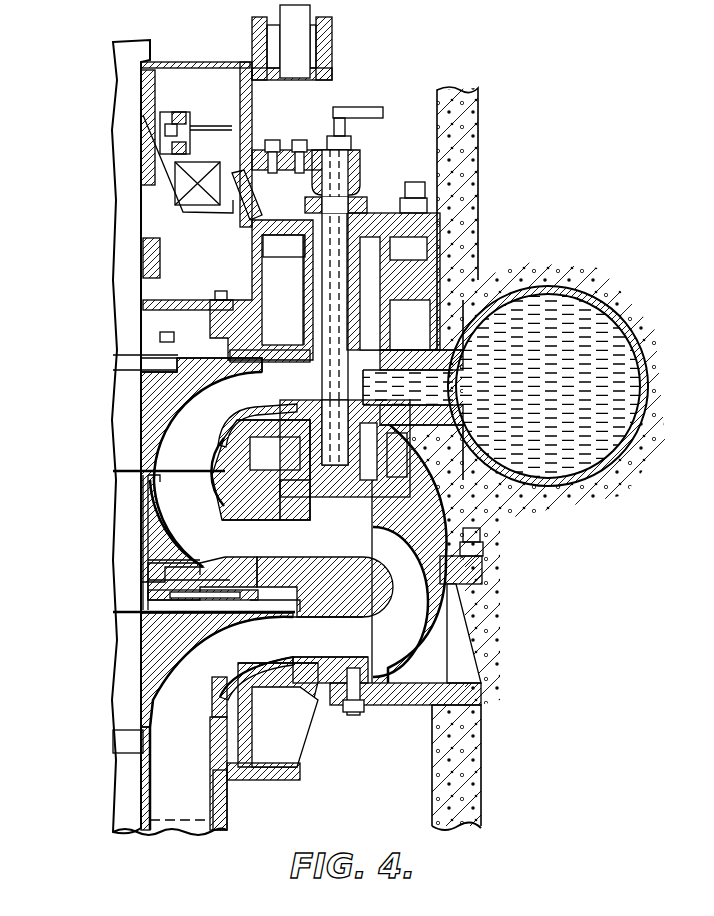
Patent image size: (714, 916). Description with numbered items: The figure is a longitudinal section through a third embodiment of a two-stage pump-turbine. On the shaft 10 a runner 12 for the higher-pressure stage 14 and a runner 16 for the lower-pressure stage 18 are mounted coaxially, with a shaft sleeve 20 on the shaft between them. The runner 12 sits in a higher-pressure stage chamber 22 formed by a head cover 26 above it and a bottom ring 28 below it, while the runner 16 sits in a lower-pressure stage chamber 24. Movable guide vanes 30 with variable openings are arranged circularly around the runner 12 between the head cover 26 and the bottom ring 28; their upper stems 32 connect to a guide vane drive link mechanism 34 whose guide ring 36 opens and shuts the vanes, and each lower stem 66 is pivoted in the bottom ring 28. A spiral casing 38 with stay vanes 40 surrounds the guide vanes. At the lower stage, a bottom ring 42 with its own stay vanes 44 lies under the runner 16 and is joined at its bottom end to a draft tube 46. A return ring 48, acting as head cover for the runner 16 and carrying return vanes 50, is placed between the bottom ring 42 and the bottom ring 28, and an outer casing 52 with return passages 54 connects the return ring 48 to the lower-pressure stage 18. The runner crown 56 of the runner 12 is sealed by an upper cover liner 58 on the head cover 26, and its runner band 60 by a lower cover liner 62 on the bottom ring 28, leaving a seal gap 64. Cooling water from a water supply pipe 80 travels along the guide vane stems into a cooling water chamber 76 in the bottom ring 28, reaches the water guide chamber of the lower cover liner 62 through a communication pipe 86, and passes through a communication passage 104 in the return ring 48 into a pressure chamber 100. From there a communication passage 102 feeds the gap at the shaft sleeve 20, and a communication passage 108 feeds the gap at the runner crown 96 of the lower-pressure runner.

The shaft 10 is at (120, 245).
The runner 12 is at (148, 458).
The higher-pressure stage 14 is at (99, 445).
The runner 16 is at (200, 680).
The lower-pressure stage 18 is at (97, 703).
The shaft sleeve 20 is at (165, 498).
The higher-pressure stage chamber 22 is at (270, 345).
The lower-pressure stage chamber 24 is at (255, 668).
The head cover 26 is at (372, 290).
The bottom ring 28 is at (262, 430).
The movable guide vanes 30 is at (310, 372).
The upper stems 32 is at (312, 250).
The guide vane drive link mechanism 34 is at (371, 155).
The guide ring 36 is at (252, 122).
The spiral casing 38 is at (615, 320).
The stay vanes 40 is at (455, 380).
The bottom ring 42 is at (320, 680).
The stay vanes 44 is at (375, 705).
The draft tube 46 is at (227, 795).
The return ring 48 is at (232, 494).
The return vanes 50 is at (160, 535).
The outer casing 52 is at (433, 605).
The return passages 54 is at (408, 705).
The runner crown 56 is at (160, 380).
The upper cover liner 58 is at (220, 330).
The runner band 60 is at (250, 425).
The lower cover liner 62 is at (160, 490).
The seal gap 64 is at (175, 418).
The lower stem 66 is at (346, 440).
The cooling water chamber 76 is at (335, 480).
The water supply pipe 80 is at (355, 108).
The communication pipe 86 is at (272, 490).
The runner crown 96 is at (155, 640).
The pressure chamber 100 is at (185, 605).
The communication passage 102 is at (165, 598).
The communication passage 104 is at (273, 525).
The communication passage 108 is at (250, 620).